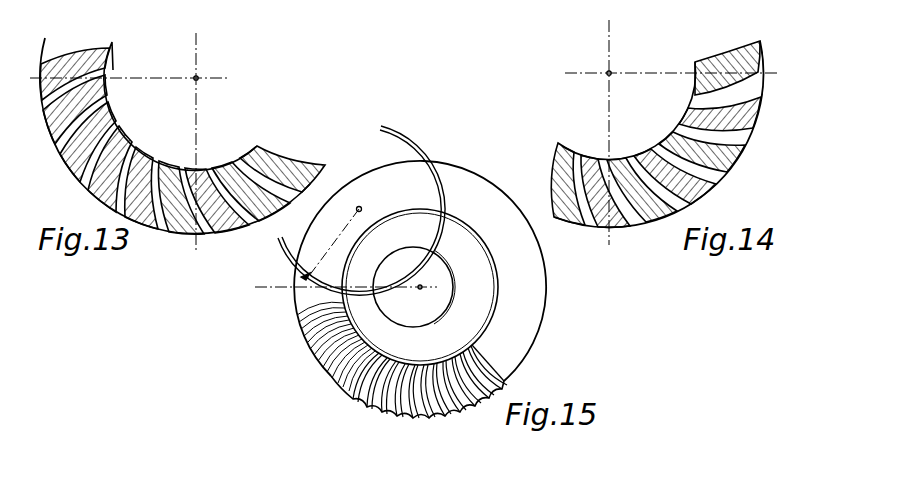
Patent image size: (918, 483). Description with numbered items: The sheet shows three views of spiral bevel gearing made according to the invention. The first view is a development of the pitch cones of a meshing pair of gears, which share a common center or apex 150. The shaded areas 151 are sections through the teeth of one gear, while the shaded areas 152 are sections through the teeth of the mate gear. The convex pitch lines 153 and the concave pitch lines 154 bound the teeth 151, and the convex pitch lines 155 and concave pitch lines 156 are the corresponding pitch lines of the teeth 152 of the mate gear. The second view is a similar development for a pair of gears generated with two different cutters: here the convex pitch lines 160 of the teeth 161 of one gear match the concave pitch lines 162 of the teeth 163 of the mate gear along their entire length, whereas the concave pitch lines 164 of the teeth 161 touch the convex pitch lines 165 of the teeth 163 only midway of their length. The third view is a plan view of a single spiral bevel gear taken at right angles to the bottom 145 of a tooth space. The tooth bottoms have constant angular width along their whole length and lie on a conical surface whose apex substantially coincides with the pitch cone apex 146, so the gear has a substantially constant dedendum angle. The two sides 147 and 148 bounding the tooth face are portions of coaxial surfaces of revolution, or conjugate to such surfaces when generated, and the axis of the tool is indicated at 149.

In FIG. 15, the bottom of a tooth space 145 is at (325, 284).
In FIG. 15, the pitch cone apex 146 is at (419, 289).
In FIG. 15, the side of the tooth face 147 is at (315, 268).
In FIG. 15, the side of the tooth face 148 is at (347, 300).
In FIG. 15, the axis of the tool 149 is at (361, 207).
In FIG. 13, the common center or apex 150 is at (200, 77).
In FIG. 13, the teeth of one gear 151 is at (146, 222).
In FIG. 13, the teeth of the mate gear 152 is at (198, 172).
In FIG. 13, the convex pitch lines 153 is at (88, 152).
In FIG. 13, the concave pitch lines 154 is at (224, 202).
In FIG. 13, the convex pitch lines 155 is at (195, 240).
In FIG. 13, the concave pitch lines 156 is at (218, 233).
In FIG. 14, the convex pitch lines 160 is at (637, 157).
In FIG. 14, the teeth of one gear 161 is at (693, 195).
In FIG. 14, the concave pitch lines 162 is at (673, 218).
In FIG. 14, the teeth of the mate gear 163 is at (660, 212).
In FIG. 14, the concave pitch lines 164 is at (640, 224).
In FIG. 14, the convex pitch lines 165 is at (650, 218).